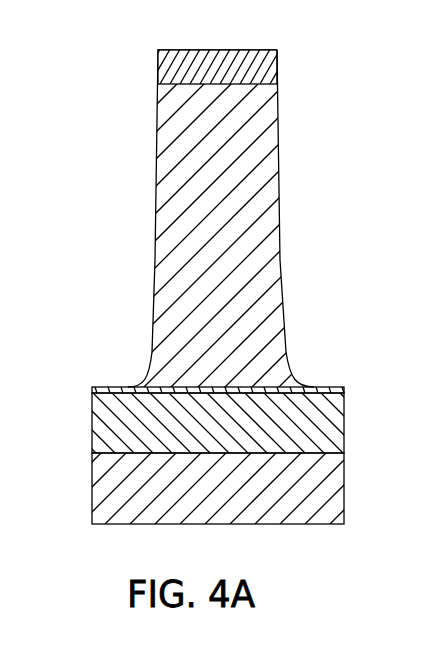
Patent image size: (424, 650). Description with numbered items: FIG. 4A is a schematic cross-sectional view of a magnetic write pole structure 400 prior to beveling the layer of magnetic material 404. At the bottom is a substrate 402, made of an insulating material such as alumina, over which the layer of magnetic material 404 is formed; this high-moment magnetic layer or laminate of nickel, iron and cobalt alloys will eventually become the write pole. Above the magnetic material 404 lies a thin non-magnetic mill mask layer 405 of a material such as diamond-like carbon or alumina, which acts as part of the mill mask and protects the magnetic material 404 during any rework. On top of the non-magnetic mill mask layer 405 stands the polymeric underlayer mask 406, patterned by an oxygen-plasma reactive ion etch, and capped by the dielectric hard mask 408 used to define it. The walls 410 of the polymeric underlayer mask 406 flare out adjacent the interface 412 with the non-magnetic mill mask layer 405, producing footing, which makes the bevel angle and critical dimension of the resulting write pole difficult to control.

The semiconductor device structure 400 is at (212, 287).
The substrate 402 is at (197, 502).
The layer of magnetic material 404 is at (197, 438).
The non-magnetic mill mask layer 405 is at (92, 389).
The polymeric underlayer mask 406 is at (197, 234).
The hard mask 408 is at (197, 80).
The walls 410 is at (283, 161).
The interface 412 is at (297, 356).